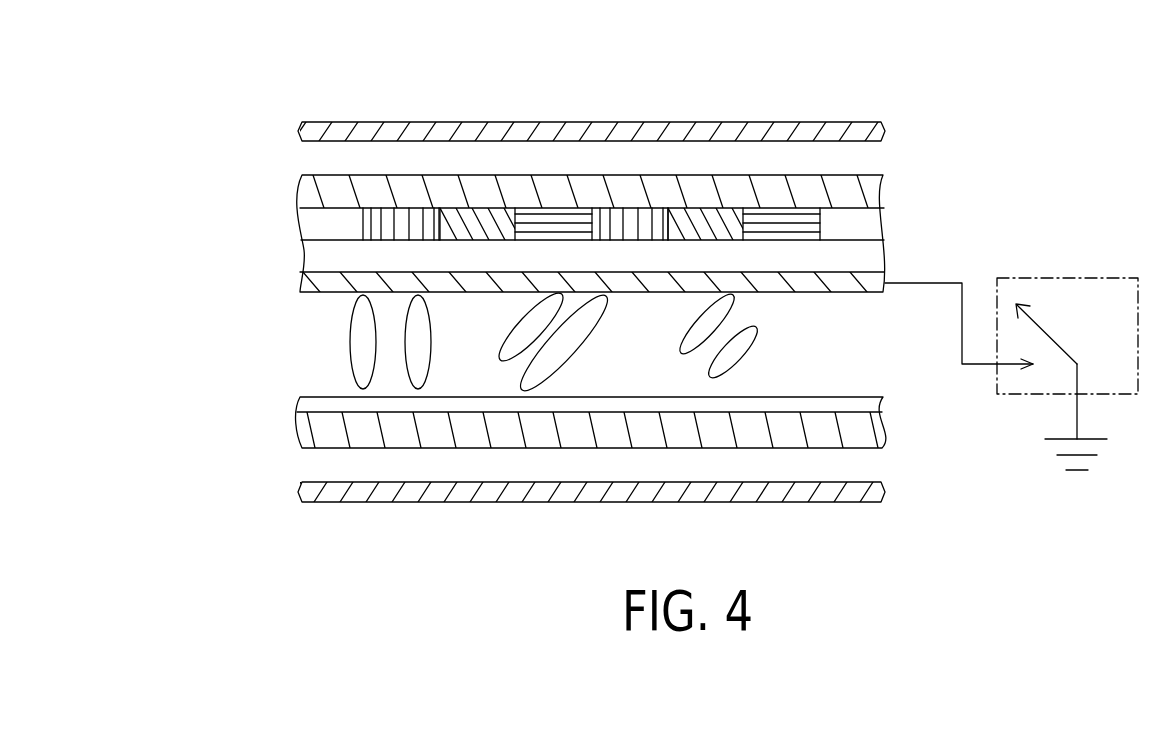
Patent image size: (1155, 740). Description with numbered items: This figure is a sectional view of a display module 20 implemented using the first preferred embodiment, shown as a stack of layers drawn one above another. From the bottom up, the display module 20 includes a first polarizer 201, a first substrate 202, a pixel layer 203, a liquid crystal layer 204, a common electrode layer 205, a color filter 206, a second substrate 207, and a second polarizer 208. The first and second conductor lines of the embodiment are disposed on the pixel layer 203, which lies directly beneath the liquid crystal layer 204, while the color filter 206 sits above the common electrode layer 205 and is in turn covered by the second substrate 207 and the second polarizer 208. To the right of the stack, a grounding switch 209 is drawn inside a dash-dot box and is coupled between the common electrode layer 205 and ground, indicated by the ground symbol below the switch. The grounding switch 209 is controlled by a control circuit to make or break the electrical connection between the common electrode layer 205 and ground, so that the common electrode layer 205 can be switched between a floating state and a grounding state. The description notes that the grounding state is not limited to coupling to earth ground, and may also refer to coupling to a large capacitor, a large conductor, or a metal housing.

The display module 20 is at (302, 96).
The first polarizer 201 is at (318, 493).
The first substrate 202 is at (318, 426).
The pixel layer 203 is at (318, 406).
The liquid crystal layer 204 is at (332, 353).
The common electrode layer 205 is at (316, 282).
The color filter 206 is at (318, 226).
The second substrate 207 is at (318, 192).
The second polarizer 208 is at (318, 137).
The grounding switch 209 is at (1066, 278).